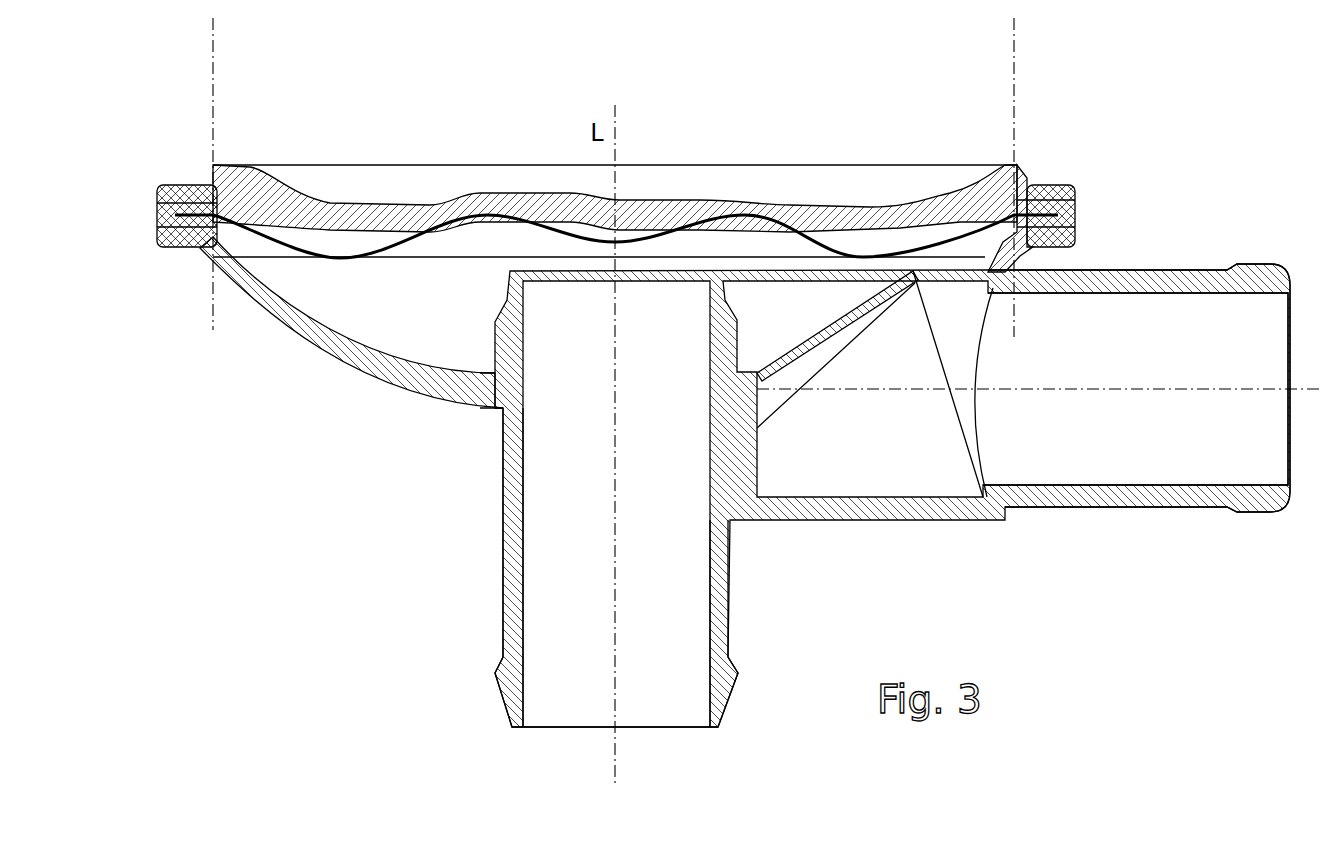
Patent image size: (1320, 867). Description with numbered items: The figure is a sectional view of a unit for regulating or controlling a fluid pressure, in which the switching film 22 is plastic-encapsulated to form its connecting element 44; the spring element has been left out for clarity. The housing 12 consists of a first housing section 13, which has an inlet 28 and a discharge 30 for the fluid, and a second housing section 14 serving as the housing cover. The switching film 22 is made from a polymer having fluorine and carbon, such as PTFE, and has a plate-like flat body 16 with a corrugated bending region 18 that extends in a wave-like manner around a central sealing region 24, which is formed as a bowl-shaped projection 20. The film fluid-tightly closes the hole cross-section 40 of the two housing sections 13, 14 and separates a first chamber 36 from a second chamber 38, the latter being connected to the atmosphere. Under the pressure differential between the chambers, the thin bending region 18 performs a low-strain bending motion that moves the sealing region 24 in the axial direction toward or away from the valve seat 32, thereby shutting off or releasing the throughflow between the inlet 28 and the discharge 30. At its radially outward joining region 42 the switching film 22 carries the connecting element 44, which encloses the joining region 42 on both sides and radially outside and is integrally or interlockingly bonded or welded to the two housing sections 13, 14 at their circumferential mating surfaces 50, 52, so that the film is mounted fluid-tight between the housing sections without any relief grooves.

The housing 12 is at (623, 218).
The first housing section 13 is at (347, 363).
The second housing section 14 is at (922, 205).
The plate-like flat body 16 is at (843, 232).
The corrugated bending region 18 is at (388, 250).
The bowl-shaped projection 20 is at (560, 232).
The switching film 22 is at (378, 250).
The sealing region 24 is at (650, 237).
The inlet 28 is at (1245, 275).
The discharge 30 is at (503, 630).
The valve seat 32 is at (507, 278).
The first chamber 36 is at (288, 298).
The second chamber 38 is at (341, 250).
The hole cross-section 40 is at (1014, 42).
The joining region 42 is at (174, 190).
The connecting element 44 is at (157, 208).
The mating surface 50 is at (185, 250).
The mating surface 52 is at (197, 205).